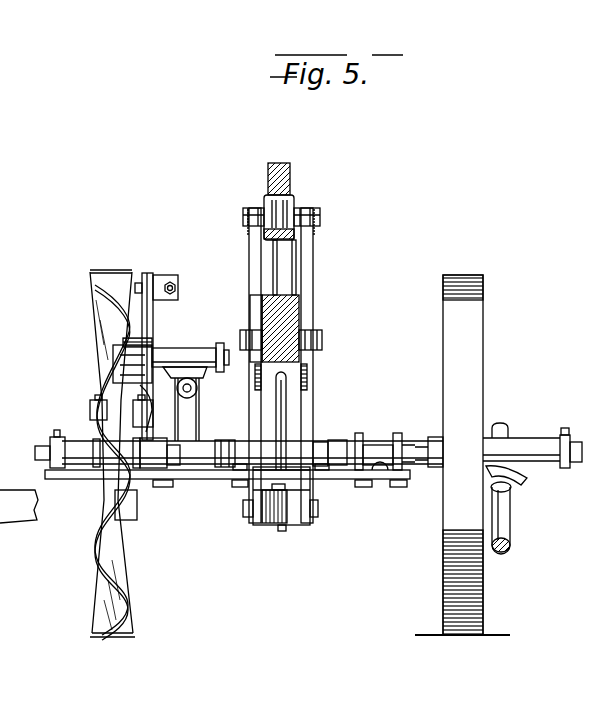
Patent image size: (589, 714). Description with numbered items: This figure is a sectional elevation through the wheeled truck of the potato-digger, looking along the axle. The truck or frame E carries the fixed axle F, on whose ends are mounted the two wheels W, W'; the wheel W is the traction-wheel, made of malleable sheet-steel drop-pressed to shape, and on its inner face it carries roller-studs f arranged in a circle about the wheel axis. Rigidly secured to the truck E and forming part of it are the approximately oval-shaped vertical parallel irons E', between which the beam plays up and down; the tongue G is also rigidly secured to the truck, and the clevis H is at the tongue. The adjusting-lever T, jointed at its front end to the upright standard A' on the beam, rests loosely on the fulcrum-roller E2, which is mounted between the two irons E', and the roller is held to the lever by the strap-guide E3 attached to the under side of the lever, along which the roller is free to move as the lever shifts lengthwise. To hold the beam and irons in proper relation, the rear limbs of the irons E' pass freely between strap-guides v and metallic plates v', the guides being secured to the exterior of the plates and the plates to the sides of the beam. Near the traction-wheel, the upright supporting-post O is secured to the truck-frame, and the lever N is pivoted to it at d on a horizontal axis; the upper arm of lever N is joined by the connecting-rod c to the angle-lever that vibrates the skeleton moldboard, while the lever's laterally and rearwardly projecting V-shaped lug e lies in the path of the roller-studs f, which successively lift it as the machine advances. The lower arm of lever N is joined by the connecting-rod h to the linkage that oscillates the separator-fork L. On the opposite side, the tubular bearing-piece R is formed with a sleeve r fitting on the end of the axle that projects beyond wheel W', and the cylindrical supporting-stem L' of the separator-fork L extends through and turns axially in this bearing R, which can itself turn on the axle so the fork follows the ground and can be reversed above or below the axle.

The adjusting-lever T is at (268, 183).
The fulcrum-roller E2 is at (283, 215).
The strap-guide E3 is at (290, 234).
The upright standard A' is at (311, 264).
The vertical parallel irons E' is at (323, 365).
The left standard E'' is at (236, 365).
The block V is at (300, 318).
The metallic plates v' is at (242, 324).
The strap-guides v is at (290, 318).
The separator-fork L is at (305, 420).
The clevis H is at (340, 440).
The axle F is at (274, 435).
The bearing F' is at (307, 458).
The truck E is at (227, 485).
The tongue G is at (290, 521).
The supporting-post O is at (195, 400).
The lever N is at (158, 342).
The pivot d is at (165, 356).
The connecting-rod c is at (174, 283).
The V-shaped lug e is at (113, 363).
The connecting-rod h is at (140, 425).
The roller-studs f is at (156, 522).
The traction-wheel W is at (95, 455).
The wheel W' is at (486, 455).
The sleeve r is at (510, 440).
The tubular bearing-piece R is at (515, 488).
The supporting-stem L' is at (518, 520).